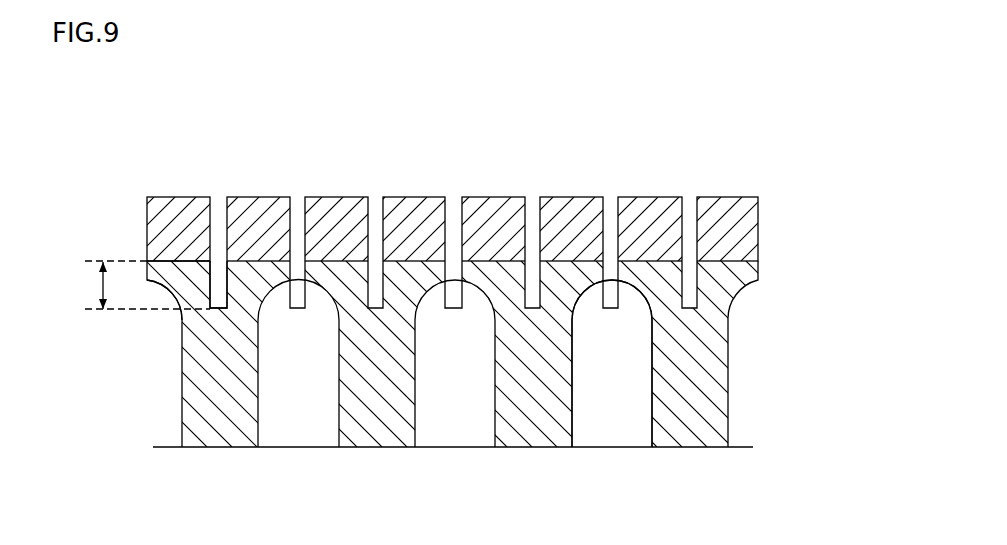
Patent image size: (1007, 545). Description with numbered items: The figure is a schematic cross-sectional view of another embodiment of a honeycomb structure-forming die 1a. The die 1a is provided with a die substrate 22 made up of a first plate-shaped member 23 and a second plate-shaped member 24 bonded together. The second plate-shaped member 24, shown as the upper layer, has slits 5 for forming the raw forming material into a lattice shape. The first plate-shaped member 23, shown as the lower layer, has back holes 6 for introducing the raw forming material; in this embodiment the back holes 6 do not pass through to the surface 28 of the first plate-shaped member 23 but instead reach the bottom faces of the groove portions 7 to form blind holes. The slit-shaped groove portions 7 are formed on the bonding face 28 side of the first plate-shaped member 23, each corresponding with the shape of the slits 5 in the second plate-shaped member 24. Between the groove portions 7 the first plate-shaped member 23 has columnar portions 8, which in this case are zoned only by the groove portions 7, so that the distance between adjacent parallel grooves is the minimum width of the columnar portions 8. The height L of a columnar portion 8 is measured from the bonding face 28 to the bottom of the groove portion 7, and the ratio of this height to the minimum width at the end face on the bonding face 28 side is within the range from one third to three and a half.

The honeycomb structure-forming die 1a is at (689, 148).
The die substrate 22 is at (808, 220).
The second plate-shaped member 24 is at (735, 235).
The first plate-shaped member 23 is at (718, 288).
The slits 5 is at (612, 205).
The back holes 6 is at (607, 415).
The groove portions 7 is at (218, 295).
The columnar portions 8 is at (190, 283).
The bonding face 28 is at (188, 258).